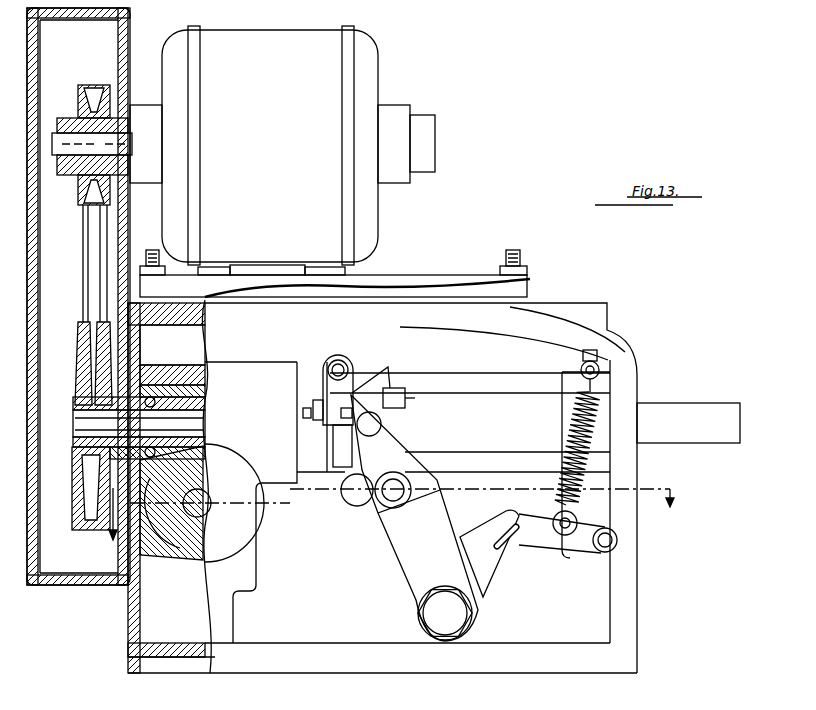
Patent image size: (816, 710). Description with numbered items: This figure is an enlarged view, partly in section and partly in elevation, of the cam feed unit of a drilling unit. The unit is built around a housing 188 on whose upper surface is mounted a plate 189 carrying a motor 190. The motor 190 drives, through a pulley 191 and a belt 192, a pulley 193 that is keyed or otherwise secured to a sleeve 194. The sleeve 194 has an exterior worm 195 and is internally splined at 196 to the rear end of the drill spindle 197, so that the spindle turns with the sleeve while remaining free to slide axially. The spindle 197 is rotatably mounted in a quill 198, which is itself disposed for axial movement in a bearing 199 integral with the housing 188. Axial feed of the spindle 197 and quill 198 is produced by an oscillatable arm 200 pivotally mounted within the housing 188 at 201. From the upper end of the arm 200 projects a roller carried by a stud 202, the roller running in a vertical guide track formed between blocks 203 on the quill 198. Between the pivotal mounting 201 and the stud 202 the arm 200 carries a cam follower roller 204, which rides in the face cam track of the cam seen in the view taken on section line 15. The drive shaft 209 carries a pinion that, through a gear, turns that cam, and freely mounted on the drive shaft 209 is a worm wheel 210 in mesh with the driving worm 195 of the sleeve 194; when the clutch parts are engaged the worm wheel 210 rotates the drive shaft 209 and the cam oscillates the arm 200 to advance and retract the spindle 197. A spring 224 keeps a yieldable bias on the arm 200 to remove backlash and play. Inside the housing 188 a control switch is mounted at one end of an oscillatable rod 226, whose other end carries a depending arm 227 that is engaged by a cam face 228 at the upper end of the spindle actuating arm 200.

The section line 15— 15 is at (389, 523).
The housing 188 is at (633, 572).
The plate 189 is at (335, 269).
The motor 190 is at (365, 80).
The pulley 191 is at (130, 118).
The belt 192 is at (92, 250).
The pulley 193 is at (82, 510).
The sleeve 194 is at (205, 406).
The worm 195 is at (205, 448).
The spline 196 is at (208, 423).
The drill spindle 197 is at (697, 411).
The quill 198 is at (539, 396).
The bearing 199 is at (496, 364).
The oscillatable arm 200 is at (398, 546).
The pivotal mounting 201 is at (418, 613).
The stud 202 is at (383, 432).
The blocks 203 is at (389, 384).
The cam follower roller 204 is at (408, 474).
The drive shaft 209 is at (206, 502).
The worm wheel 210 is at (191, 548).
The spring 224 is at (568, 440).
The oscillatable rod 226 is at (352, 356).
The depending arm 227 is at (327, 390).
The cam face 228 is at (410, 392).